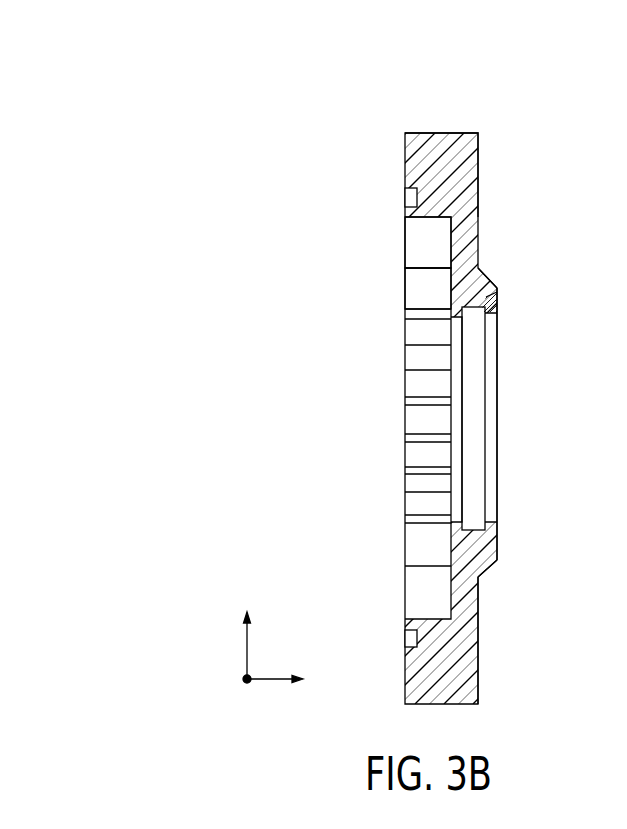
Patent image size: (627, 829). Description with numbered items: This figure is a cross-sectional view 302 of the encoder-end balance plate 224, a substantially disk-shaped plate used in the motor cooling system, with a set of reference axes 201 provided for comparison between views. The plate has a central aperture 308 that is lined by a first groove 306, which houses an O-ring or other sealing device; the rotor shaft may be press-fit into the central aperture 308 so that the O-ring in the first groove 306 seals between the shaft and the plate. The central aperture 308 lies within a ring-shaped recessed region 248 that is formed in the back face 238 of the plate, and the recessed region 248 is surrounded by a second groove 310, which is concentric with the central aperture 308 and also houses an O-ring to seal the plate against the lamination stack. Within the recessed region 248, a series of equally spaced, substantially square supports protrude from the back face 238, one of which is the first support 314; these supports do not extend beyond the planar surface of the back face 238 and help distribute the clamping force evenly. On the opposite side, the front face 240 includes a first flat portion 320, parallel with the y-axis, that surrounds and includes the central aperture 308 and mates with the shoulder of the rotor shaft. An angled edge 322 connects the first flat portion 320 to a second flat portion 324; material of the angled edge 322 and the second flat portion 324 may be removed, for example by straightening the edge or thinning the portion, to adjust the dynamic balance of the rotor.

The cross-sectional view 302 is at (446, 52).
The encoder-end balance plate 224 is at (470, 134).
The second flat portion 324 is at (465, 177).
The second groove 310 is at (398, 199).
The recessed region 248 is at (398, 240).
The angled edge 322 is at (490, 284).
The first support 314 is at (443, 302).
The first groove 306 is at (494, 299).
The front face 240 is at (527, 354).
The back face 238 is at (383, 385).
The central aperture 308 is at (522, 413).
The first flat portion 320 is at (479, 590).
The reference axes 201 is at (292, 630).